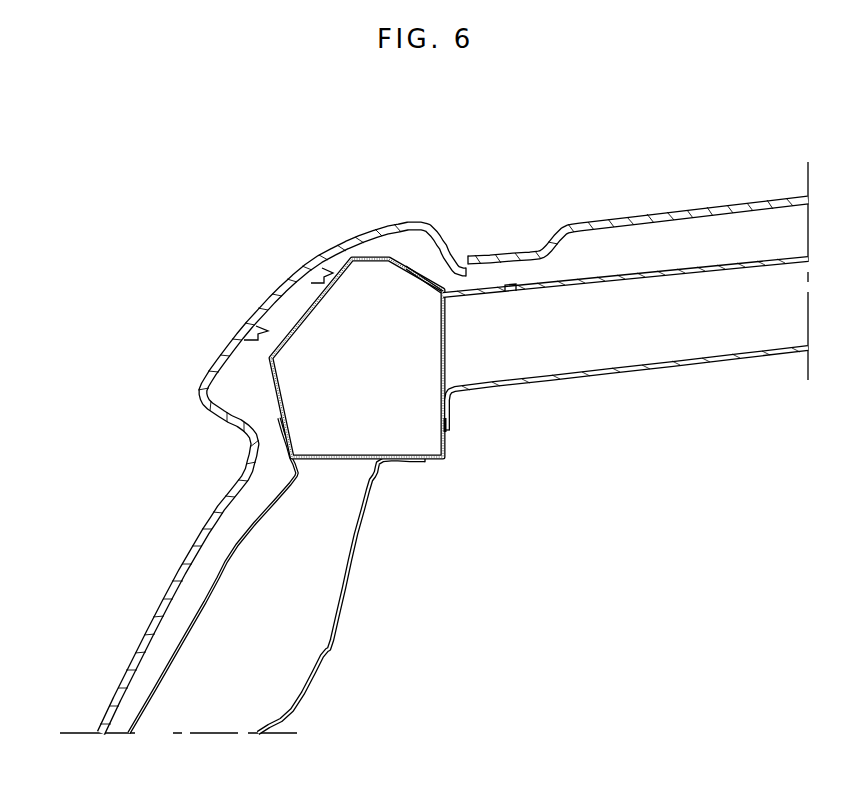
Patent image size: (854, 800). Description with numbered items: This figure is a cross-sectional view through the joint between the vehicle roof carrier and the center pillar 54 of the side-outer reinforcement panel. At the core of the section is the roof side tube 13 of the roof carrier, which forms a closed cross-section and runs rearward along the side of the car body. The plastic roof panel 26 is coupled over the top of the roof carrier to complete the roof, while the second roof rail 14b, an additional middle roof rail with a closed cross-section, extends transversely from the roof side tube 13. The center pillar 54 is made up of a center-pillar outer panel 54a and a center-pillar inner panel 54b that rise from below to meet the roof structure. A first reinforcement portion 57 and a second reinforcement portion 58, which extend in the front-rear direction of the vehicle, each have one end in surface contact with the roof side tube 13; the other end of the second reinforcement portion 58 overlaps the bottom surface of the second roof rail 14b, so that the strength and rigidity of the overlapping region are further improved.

The roof side tube 13 is at (300, 322).
The second roof rail 14b is at (686, 269).
The roof panel 26 is at (597, 221).
The center pillar 54 is at (244, 492).
The center-pillar outer panel 54a is at (176, 637).
The center-pillar inner panel 54b is at (345, 622).
The first reinforcement portion 57 is at (423, 276).
The second reinforcement portion 58 is at (452, 395).